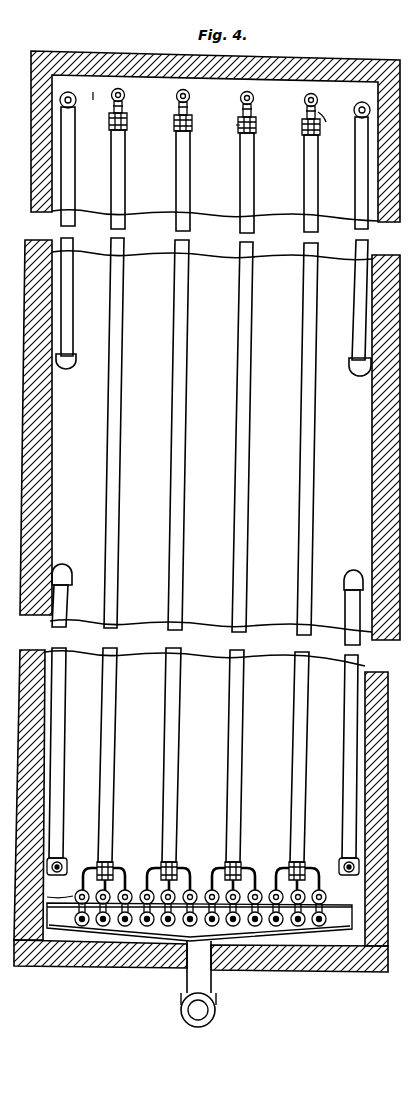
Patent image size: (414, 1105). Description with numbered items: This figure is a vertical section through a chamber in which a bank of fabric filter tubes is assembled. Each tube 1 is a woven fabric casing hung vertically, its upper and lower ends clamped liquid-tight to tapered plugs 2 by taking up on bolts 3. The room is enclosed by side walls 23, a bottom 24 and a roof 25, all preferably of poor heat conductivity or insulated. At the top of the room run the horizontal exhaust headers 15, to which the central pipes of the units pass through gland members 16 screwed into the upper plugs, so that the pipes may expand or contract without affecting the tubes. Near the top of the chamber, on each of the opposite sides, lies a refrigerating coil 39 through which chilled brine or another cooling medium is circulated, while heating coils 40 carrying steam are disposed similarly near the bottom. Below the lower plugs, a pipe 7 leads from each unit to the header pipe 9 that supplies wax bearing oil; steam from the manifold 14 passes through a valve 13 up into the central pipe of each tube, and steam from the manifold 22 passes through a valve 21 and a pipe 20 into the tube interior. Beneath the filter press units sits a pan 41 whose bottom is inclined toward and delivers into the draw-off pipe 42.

The tube 1 is at (126, 168).
The plug 2 is at (128, 119).
The bolt 3 is at (93, 92).
The pipe 7 is at (80, 882).
The header pipe 9 is at (78, 923).
The valve 13 is at (125, 870).
The manifold 14 is at (105, 925).
The exhaust header 15 is at (125, 97).
The gland member 16 is at (320, 114).
The pipe 20 is at (142, 889).
The valve 21 is at (132, 894).
The manifold 22 is at (124, 925).
The side wall 23 is at (40, 170).
The bottom 24 is at (310, 950).
The roof 25 is at (181, 58).
The refrigerating coil 39 is at (72, 140).
The heating coil 40 is at (60, 605).
The pan 41 is at (28, 934).
The draw-off pipe 42 is at (215, 1011).